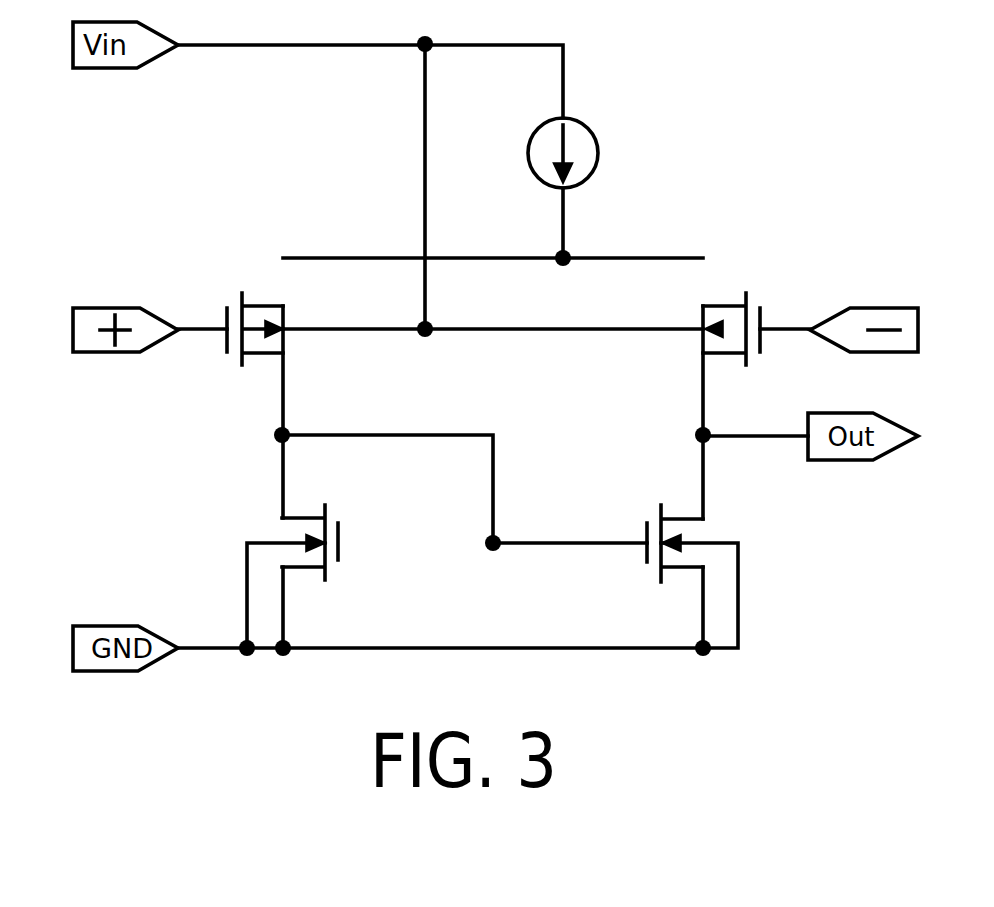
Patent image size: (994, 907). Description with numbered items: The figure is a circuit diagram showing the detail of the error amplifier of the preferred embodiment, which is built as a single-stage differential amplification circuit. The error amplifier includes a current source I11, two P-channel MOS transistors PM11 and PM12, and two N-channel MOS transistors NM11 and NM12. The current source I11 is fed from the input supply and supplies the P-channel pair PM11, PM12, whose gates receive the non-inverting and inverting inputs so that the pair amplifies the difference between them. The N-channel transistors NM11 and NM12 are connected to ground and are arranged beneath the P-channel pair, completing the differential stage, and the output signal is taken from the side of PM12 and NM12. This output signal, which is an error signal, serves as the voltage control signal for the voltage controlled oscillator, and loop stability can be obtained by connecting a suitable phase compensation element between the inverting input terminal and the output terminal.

The current source I11 is at (598, 138).
The P-channel MOS transistor PM11 is at (227, 295).
The P-channel MOS transistor PM12 is at (798, 287).
The N-channel MOS transistor NM11 is at (338, 517).
The N-channel MOS transistor NM12 is at (648, 513).